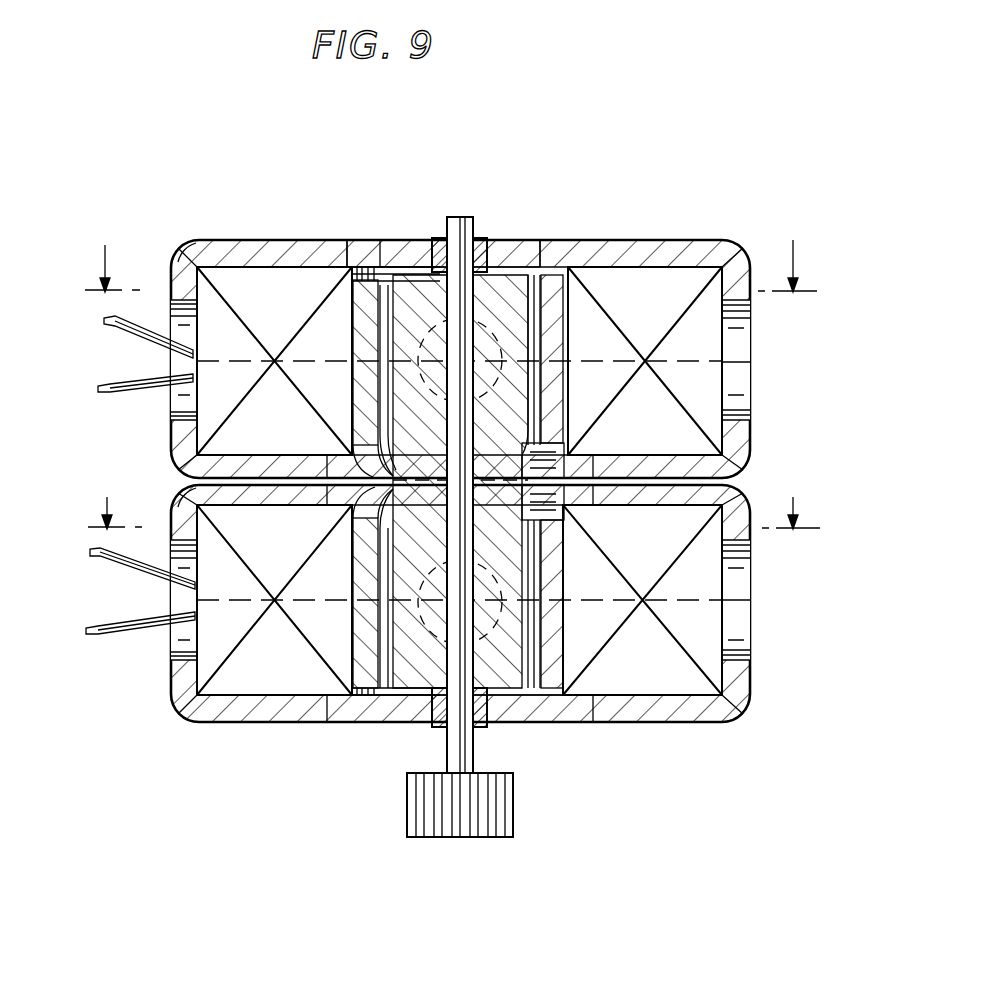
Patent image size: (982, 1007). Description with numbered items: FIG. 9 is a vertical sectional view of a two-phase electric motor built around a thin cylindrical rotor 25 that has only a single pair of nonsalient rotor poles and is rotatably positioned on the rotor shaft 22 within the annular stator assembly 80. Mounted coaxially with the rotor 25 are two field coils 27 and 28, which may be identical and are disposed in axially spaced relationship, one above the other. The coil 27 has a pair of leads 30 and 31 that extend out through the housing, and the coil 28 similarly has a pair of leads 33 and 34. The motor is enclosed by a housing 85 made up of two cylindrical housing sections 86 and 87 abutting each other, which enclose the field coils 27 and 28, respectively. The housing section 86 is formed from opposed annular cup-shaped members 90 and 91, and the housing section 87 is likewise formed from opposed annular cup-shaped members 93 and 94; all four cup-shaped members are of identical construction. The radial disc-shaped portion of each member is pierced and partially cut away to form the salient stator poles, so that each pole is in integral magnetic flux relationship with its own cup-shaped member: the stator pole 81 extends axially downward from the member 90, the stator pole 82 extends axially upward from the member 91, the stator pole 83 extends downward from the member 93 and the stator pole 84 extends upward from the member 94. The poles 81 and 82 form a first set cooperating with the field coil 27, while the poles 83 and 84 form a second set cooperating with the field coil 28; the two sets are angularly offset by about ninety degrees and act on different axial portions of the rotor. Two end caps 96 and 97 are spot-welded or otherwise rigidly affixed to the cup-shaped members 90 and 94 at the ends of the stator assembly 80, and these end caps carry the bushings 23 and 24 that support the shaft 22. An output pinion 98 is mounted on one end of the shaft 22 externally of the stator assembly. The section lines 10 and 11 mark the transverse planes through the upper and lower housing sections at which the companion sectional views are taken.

The section line 10- 10 is at (450, 249).
The section line 11- 11 is at (447, 496).
The rotor shaft 22 is at (452, 217).
The bushing 23 is at (438, 238).
The bushing 24 is at (432, 726).
The rotor 25 is at (517, 333).
The field coil 27 is at (705, 343).
The field coil 28 is at (708, 642).
The lead 30 is at (138, 335).
The lead 31 is at (140, 397).
The lead 33 is at (120, 568).
The lead 34 is at (120, 640).
The stator assembly 80 is at (176, 718).
The salient stator pole 81 is at (558, 388).
The salient stator pole 82 is at (353, 388).
The salient stator pole 83 is at (554, 630).
The salient stator pole 84 is at (348, 692).
The housing 85 is at (740, 720).
The housing section 86 is at (206, 240).
The housing section 87 is at (236, 722).
The cup-shaped member 90 is at (640, 243).
The cup-shaped member 91 is at (752, 433).
The cup-shaped member 93 is at (178, 508).
The cup-shaped member 94 is at (650, 722).
The end cap 96 is at (518, 240).
The end cap 97 is at (536, 722).
The output pinion 98 is at (420, 838).